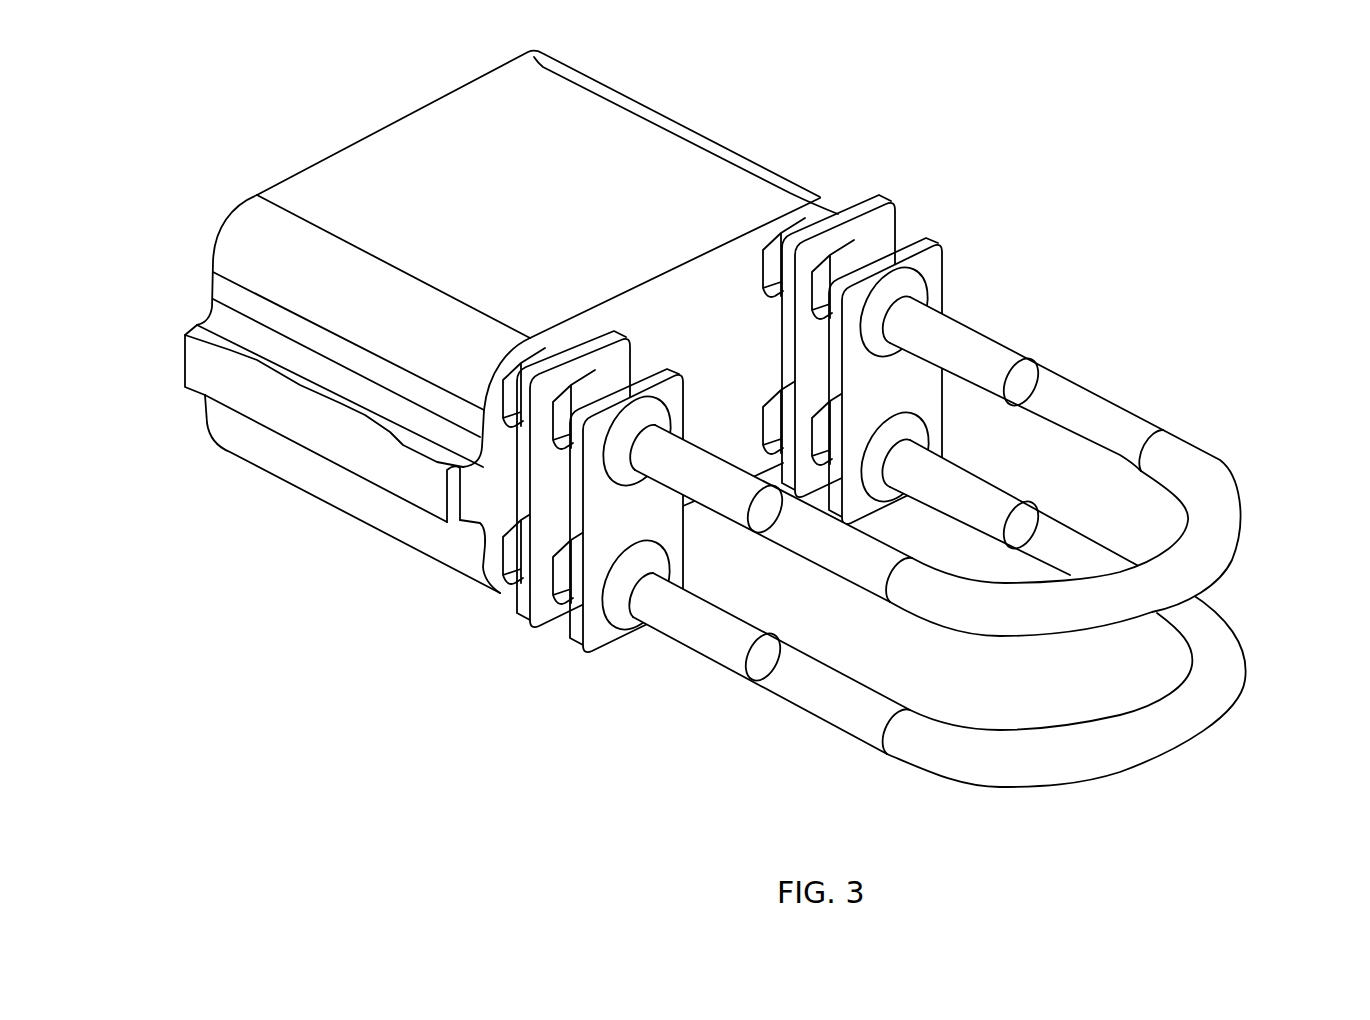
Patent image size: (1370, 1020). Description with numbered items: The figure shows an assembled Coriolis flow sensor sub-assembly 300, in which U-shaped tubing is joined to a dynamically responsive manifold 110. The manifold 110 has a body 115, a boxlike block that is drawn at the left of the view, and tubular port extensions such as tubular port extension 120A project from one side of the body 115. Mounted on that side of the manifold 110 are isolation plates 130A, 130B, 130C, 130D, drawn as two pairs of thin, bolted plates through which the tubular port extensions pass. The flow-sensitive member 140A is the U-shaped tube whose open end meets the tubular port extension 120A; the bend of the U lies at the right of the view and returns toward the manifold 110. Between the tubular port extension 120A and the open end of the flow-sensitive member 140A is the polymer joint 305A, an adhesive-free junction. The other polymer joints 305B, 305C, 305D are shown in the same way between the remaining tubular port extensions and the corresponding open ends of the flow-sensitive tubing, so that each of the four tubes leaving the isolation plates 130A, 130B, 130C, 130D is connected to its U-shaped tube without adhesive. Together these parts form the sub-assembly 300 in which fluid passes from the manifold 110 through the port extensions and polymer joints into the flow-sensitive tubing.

The Coriolis flow sensor sub-assembly 300 is at (837, 848).
The dynamically responsive manifold 110 is at (756, 128).
The body 115 is at (766, 176).
The tubular port extension 120A is at (1017, 356).
The isolation plate 130A is at (884, 206).
The isolation plate 130B is at (936, 238).
The isolation plate 130C is at (521, 624).
The isolation plate 130D is at (567, 649).
The flow-sensitive member 140A is at (1204, 452).
The polymer joint 305A is at (1030, 360).
The polymer joint 305B is at (1027, 500).
The polymer joint 305C is at (768, 534).
The polymer joint 305D is at (757, 680).